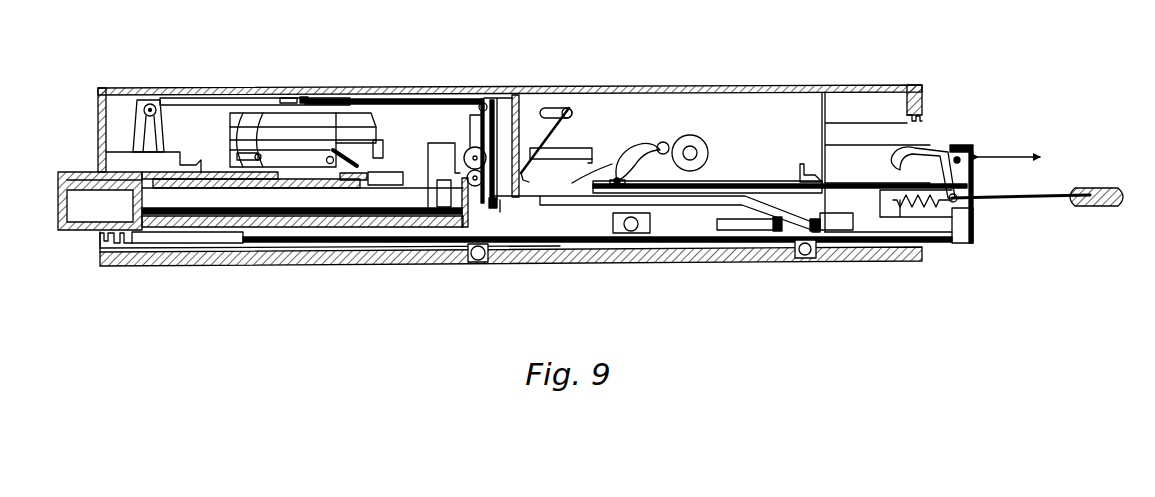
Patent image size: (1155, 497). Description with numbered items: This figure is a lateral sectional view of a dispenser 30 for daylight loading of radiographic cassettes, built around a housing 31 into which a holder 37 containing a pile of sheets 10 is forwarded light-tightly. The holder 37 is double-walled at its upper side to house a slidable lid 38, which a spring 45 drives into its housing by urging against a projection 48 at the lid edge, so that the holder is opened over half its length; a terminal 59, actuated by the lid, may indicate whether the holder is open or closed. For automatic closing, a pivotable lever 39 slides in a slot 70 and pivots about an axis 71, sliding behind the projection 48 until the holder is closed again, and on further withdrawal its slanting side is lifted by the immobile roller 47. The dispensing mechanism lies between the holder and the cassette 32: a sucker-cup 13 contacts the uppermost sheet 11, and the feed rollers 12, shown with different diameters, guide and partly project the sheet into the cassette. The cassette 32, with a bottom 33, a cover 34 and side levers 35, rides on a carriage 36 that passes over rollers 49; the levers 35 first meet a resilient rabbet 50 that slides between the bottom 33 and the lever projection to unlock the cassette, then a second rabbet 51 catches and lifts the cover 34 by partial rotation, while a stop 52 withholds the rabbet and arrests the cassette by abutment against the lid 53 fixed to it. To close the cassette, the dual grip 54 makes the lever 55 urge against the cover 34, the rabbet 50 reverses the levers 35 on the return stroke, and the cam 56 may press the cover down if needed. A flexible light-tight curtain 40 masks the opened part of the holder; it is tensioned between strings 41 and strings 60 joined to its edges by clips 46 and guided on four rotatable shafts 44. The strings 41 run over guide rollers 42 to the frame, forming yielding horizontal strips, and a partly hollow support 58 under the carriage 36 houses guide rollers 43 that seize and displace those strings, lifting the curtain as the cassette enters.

The pile of sheets 10 is at (208, 232).
The uppermost sheet 11 is at (292, 208).
The feed rollers 12 is at (470, 150).
The sucker-cup 13 is at (442, 207).
The dispenser 30 is at (556, 82).
The housing 31 is at (686, 87).
The cassette 32 is at (760, 180).
The bottom 33 is at (733, 193).
The cover 34 is at (638, 183).
The levers 35 is at (622, 170).
The carriage 36 is at (608, 237).
The holder 37 is at (133, 230).
The lid 38 is at (213, 170).
The pivotable lever 39 is at (352, 176).
The curtain 40 is at (340, 99).
The strings 41 is at (186, 98).
The guide rollers 42 is at (773, 232).
The guide rollers 43 is at (818, 232).
The rotatable shafts 44 is at (493, 97).
The spring 45 is at (385, 130).
The clips 46 is at (288, 97).
The roller 47 is at (305, 98).
The projection 48 is at (383, 150).
The rollers 49 is at (477, 262).
The rabbet 50 is at (577, 178).
The second rabbet 51 is at (552, 133).
The stop 52 is at (583, 150).
The lid 53 is at (520, 165).
The dual grip 54 is at (1096, 188).
The lever 55 is at (936, 150).
The cam 56 is at (805, 164).
The support 58 is at (843, 225).
The terminal 59 is at (388, 178).
The strings 60 is at (493, 210).
The slot 70 is at (242, 124).
The axis 71 is at (268, 126).